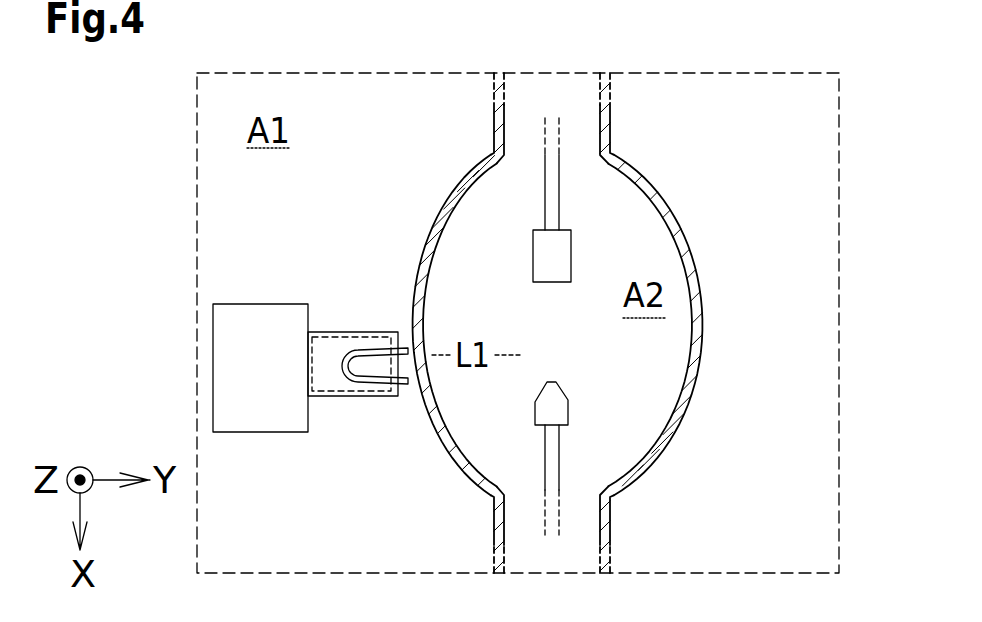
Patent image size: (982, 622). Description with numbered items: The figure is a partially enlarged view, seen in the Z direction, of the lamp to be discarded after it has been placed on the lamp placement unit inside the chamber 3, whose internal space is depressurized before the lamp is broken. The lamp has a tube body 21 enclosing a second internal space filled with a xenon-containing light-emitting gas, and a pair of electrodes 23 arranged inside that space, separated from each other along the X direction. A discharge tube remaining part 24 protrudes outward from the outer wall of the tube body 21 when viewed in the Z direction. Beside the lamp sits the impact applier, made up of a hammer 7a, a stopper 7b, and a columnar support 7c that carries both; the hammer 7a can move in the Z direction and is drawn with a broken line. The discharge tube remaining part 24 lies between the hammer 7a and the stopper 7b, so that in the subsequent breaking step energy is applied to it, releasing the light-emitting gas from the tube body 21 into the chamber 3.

The chamber 3 is at (197, 208).
The hammer 7a is at (321, 332).
The stopper 7b is at (345, 397).
The columnar support 7c is at (250, 432).
The tube body 21 is at (704, 327).
The electrodes 23 is at (571, 250).
The discharge tube remaining part 24 is at (377, 350).